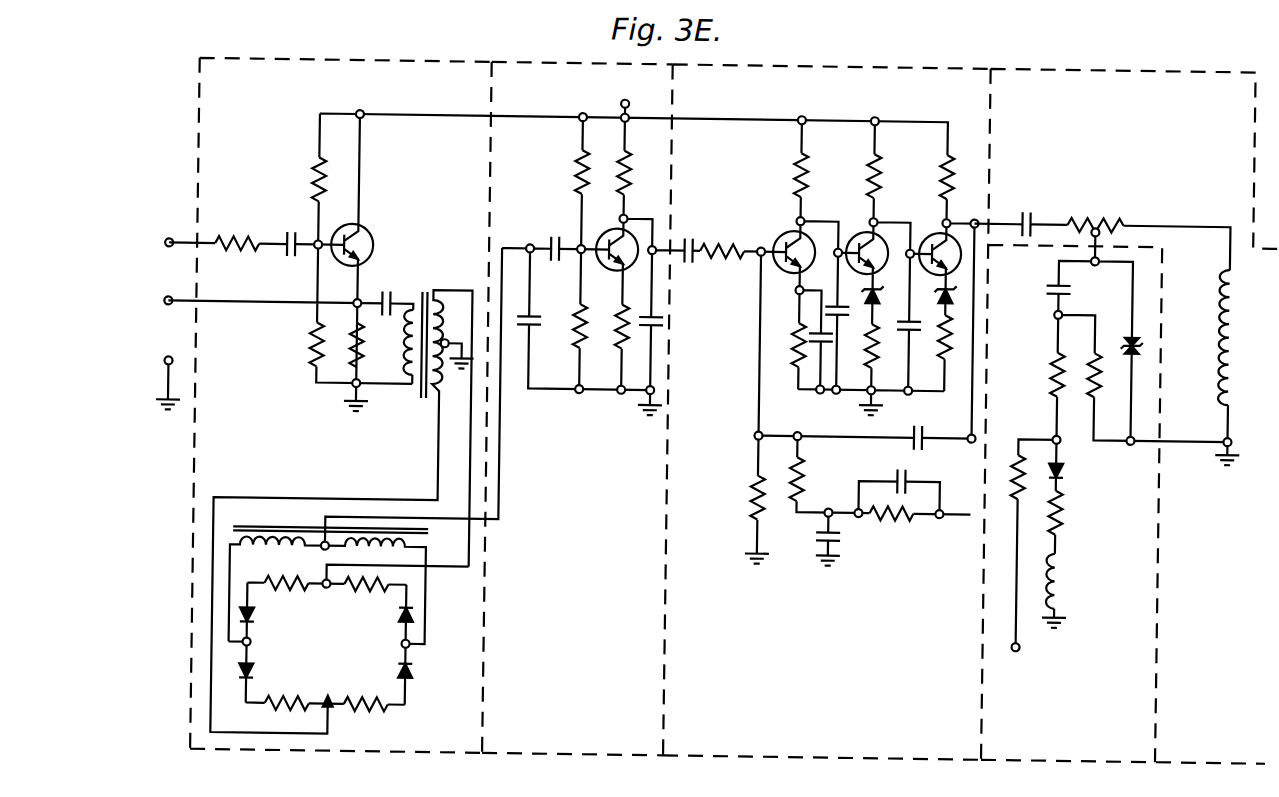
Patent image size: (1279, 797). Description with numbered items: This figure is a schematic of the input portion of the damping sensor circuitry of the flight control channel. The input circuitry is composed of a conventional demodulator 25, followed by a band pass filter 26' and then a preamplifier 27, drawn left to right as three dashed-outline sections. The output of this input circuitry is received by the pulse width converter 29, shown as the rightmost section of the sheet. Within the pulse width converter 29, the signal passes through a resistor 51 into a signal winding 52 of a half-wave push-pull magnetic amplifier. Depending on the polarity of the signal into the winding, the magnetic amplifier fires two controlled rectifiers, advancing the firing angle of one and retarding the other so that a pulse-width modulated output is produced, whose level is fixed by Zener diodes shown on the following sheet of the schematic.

The demodulator 25 is at (296, 61).
The band pass filter 26' is at (629, 387).
The preamplifier 27 is at (870, 62).
The pulse width converter 29 is at (1131, 63).
The resistor 51 is at (1085, 211).
The signal winding 52 is at (1238, 225).